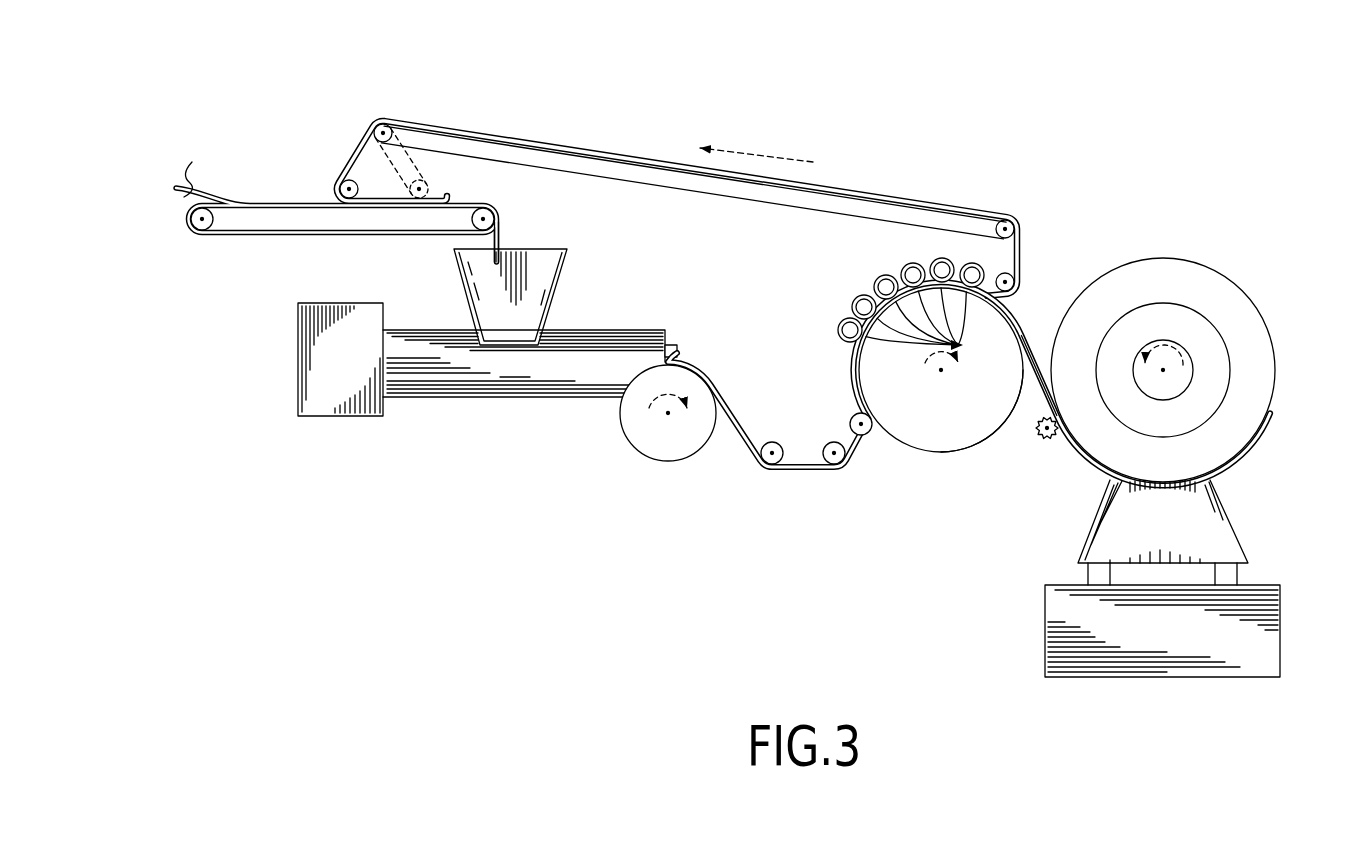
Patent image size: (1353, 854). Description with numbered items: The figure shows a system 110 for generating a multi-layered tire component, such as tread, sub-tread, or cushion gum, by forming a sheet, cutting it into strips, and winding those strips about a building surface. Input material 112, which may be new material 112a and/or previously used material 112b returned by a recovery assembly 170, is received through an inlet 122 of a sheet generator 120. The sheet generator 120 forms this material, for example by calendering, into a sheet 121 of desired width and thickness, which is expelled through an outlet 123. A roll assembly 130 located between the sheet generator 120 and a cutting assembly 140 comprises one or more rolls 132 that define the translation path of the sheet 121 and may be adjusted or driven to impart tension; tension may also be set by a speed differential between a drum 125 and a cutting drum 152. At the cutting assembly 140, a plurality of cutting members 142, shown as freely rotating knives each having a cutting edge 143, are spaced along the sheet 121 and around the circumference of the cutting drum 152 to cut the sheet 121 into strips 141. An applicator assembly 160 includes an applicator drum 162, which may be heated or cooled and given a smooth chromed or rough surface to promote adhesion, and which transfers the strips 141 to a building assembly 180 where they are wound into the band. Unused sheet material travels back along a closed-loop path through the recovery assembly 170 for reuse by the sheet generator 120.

The system 110 is at (597, 103).
The input material 112 is at (503, 227).
The new material 112a is at (275, 204).
The previously used material 112b is at (505, 137).
The sheet generator 120 is at (700, 358).
The sheet 121 is at (733, 403).
The inlet 122 is at (560, 249).
The outlet 123 is at (676, 330).
The drum 125 is at (1240, 315).
The roll assembly 130 is at (817, 451).
The rolls 132 is at (765, 470).
The cutting assembly 140 is at (850, 249).
The strips 141 is at (1025, 340).
The cutting members 142 is at (880, 277).
The cutting edge 143 is at (937, 325).
The cutting drum 152 is at (990, 420).
The applicator assembly 160 is at (1121, 248).
The applicator drum 162 is at (942, 436).
The recovery assembly 170 is at (443, 124).
The building assembly 180 is at (1178, 329).